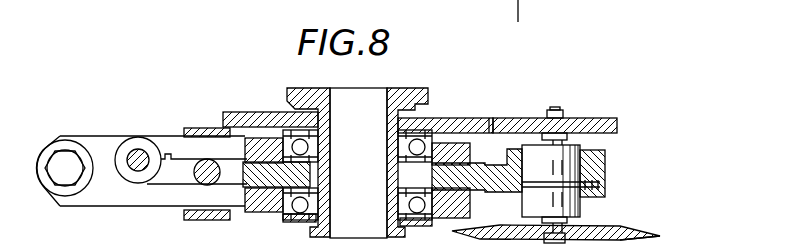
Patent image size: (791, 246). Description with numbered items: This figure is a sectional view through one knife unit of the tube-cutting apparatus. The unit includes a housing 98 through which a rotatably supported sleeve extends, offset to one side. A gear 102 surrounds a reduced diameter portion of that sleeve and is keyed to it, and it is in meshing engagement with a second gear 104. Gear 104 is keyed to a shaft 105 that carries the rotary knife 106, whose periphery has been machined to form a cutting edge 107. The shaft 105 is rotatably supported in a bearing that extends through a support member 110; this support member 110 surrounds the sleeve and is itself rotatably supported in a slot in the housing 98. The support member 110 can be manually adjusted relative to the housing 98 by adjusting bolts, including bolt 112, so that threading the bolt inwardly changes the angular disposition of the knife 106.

The housing 98 is at (152, 206).
The gear 102 is at (462, 119).
The gear 104 is at (598, 119).
The shaft 105 is at (545, 137).
The rotary knife 106 is at (625, 227).
The cutting edge 107 is at (655, 237).
The support member 110 is at (167, 154).
The adjusting bolt 112 is at (137, 148).